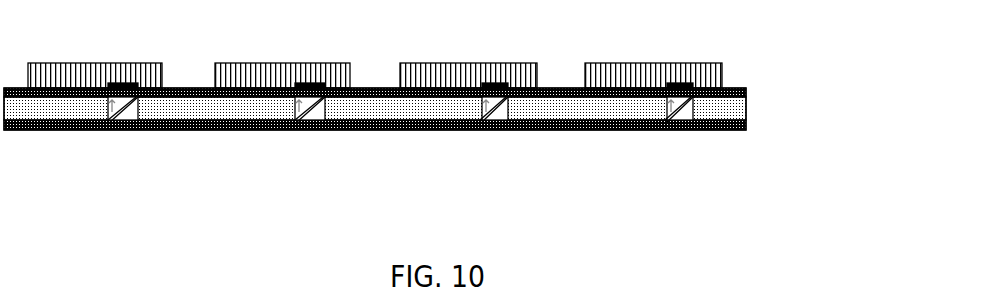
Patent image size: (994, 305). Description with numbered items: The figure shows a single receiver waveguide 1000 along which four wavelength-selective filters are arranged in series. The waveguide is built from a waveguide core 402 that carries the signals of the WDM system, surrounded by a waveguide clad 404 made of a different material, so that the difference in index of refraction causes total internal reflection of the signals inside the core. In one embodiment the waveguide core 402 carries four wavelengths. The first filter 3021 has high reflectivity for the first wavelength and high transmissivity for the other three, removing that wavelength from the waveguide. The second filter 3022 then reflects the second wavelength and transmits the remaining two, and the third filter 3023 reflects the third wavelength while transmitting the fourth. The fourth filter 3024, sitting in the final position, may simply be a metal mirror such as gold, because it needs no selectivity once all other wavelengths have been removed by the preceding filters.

The receiver waveguide 1000 is at (132, 39).
The waveguide core 402 is at (746, 105).
The waveguide clad 404 is at (746, 88).
The first filter 3021 is at (123, 130).
The second filter 3022 is at (305, 130).
The third filter 3023 is at (495, 130).
The fourth filter 3024 is at (680, 130).